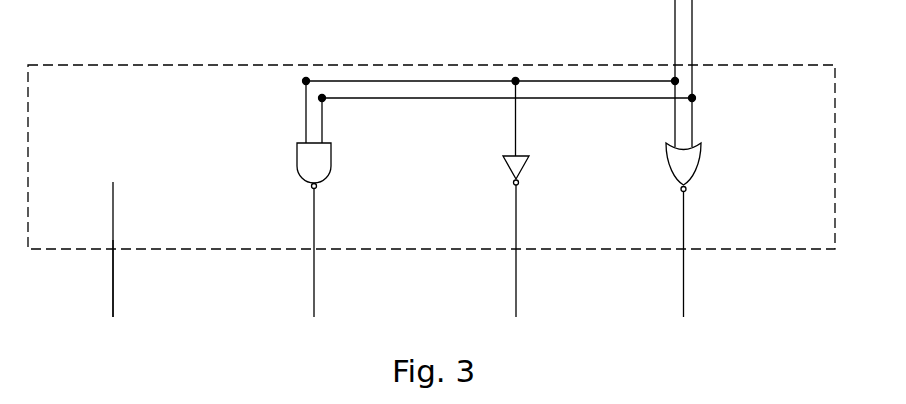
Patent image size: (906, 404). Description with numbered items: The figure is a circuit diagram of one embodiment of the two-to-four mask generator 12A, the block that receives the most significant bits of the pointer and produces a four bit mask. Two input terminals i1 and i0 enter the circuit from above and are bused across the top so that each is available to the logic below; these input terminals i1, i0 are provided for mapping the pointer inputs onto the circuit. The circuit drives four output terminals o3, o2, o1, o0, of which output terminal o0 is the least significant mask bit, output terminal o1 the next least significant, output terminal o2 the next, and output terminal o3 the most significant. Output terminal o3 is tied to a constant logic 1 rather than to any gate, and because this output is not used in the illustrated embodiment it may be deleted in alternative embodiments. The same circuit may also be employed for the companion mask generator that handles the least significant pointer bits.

The mask generator 12A is at (431, 158).
The constant logic one input 1 is at (123, 235).
The input terminal i1 is at (664, 73).
The input terminal i0 is at (701, 73).
The output terminal o3 is at (125, 278).
The output terminal o2 is at (326, 253).
The output terminal o1 is at (528, 251).
The output terminal o0 is at (696, 255).